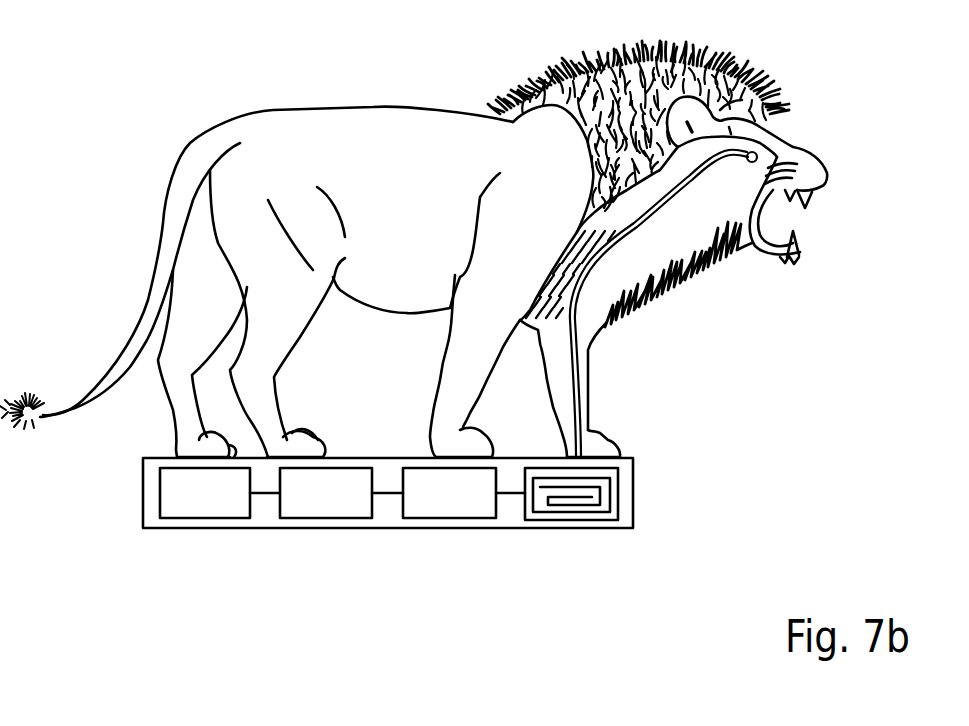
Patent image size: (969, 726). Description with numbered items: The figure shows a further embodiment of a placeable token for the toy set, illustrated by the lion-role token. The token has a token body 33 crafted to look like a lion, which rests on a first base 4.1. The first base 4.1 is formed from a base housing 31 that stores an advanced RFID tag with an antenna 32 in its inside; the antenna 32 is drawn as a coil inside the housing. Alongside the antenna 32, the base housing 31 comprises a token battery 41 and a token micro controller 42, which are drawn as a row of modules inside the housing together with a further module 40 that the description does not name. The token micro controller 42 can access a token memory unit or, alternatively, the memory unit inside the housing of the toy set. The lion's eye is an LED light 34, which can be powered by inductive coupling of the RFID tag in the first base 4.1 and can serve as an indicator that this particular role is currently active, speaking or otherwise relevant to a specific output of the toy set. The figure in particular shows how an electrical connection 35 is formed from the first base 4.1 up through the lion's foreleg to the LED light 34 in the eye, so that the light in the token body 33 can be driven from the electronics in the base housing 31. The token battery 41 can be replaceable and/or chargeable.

The base housing 31 is at (143, 500).
The antenna 32 is at (575, 520).
The token body 33 is at (403, 198).
The LED light 34 is at (770, 153).
The electrical connection 35 is at (577, 367).
The electronic module 40 is at (455, 520).
The token battery 41 is at (330, 520).
The token micro controller 42 is at (207, 520).
The first base 4.1 is at (445, 533).